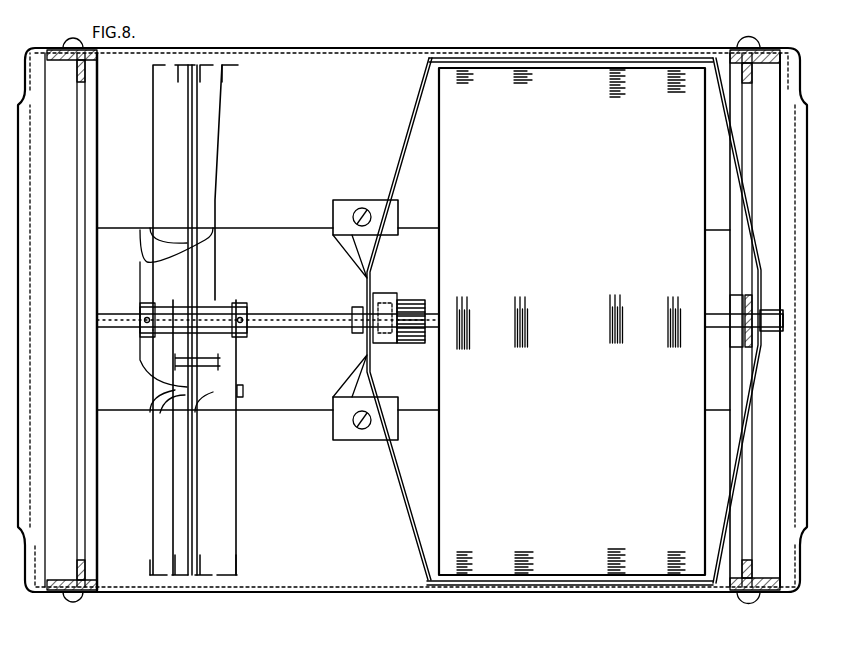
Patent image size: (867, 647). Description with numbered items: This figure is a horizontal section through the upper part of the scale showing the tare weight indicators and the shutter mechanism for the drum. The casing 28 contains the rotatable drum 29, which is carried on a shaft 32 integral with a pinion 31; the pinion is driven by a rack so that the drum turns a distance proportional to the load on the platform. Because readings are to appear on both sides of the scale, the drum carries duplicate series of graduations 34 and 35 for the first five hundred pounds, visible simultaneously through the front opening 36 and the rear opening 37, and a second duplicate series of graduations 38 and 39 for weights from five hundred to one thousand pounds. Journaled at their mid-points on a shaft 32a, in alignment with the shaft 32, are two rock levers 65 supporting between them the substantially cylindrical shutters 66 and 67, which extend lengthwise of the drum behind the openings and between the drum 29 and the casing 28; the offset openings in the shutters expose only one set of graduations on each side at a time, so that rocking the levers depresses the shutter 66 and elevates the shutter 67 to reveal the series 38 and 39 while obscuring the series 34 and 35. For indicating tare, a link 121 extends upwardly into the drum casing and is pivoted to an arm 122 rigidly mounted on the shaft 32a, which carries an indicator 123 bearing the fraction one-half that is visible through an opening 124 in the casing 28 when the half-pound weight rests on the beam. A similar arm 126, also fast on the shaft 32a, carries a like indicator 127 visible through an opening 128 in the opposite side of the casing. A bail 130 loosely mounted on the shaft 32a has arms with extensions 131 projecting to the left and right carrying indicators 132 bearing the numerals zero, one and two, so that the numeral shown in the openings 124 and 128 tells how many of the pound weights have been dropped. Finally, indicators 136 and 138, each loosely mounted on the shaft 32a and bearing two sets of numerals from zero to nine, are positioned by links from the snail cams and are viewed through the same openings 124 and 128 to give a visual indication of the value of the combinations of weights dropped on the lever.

The casing 28 is at (355, 588).
The rotatable drum 29 is at (575, 578).
The pinion 31 is at (413, 342).
The shaft 32 is at (432, 313).
The shaft 32a is at (320, 324).
The series of graduations 34 is at (468, 78).
The series of graduations 35 is at (677, 80).
The front opening 36 is at (486, 588).
The rear opening 37 is at (632, 54).
The second series of graduations 38 is at (525, 555).
The second series of graduations 39 is at (622, 73).
The rock lever 65 is at (403, 147).
The shutter 66 is at (632, 583).
The shutter 67 is at (573, 62).
The link 121 is at (241, 393).
The arm 122 is at (238, 470).
The indicator 123 is at (230, 568).
The opening 124 is at (177, 592).
The arm 126 is at (153, 185).
The indicator 127 is at (163, 68).
The opening 128 is at (208, 52).
The bail 130 is at (204, 400).
The extension 131 is at (218, 143).
The indicator 132 is at (237, 67).
The indicator 136 is at (178, 70).
The indicator 138 is at (212, 78).